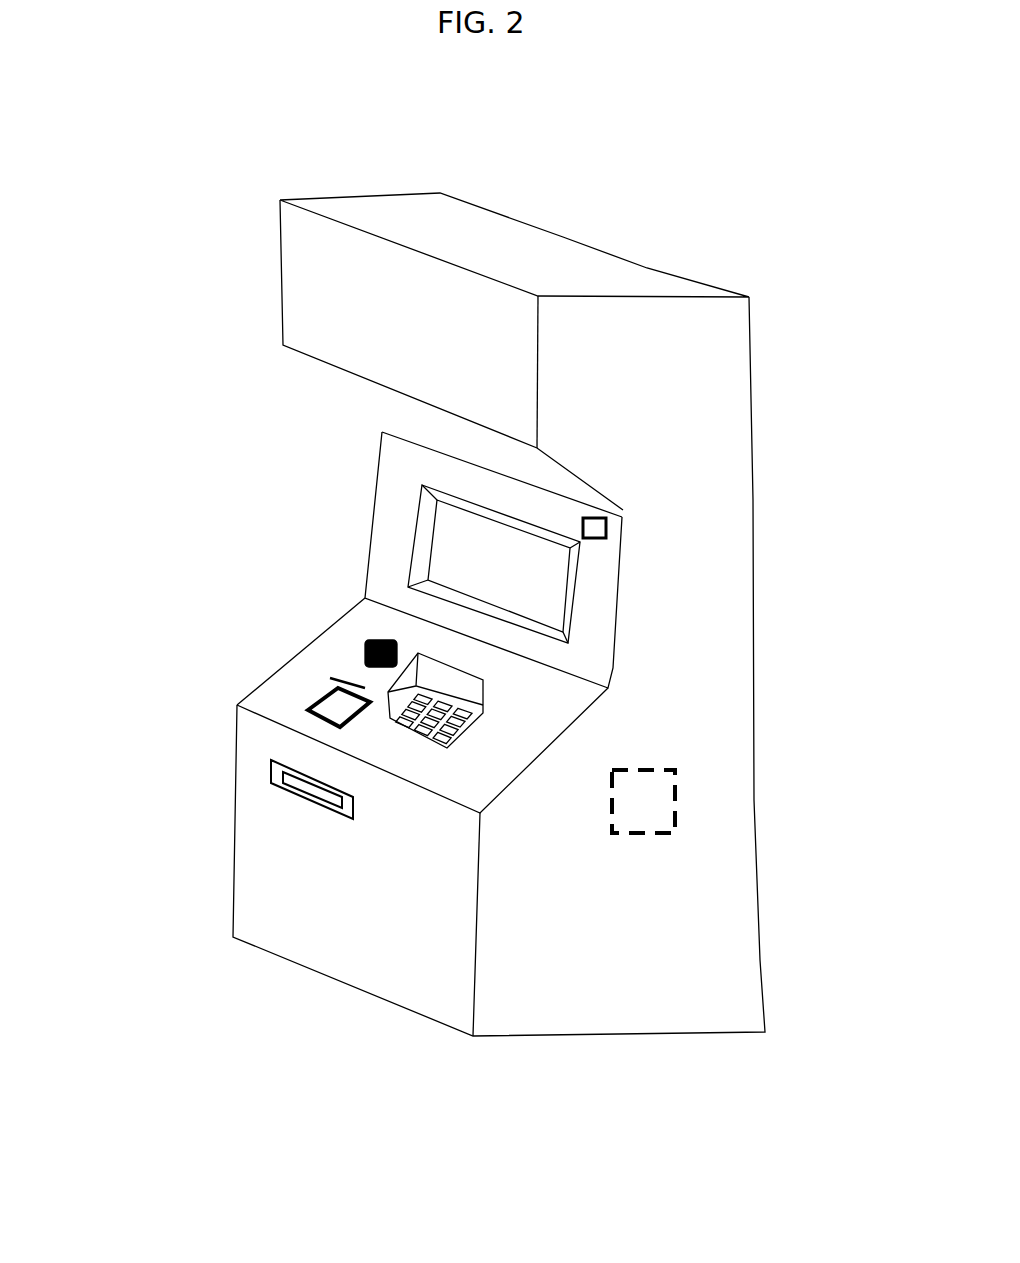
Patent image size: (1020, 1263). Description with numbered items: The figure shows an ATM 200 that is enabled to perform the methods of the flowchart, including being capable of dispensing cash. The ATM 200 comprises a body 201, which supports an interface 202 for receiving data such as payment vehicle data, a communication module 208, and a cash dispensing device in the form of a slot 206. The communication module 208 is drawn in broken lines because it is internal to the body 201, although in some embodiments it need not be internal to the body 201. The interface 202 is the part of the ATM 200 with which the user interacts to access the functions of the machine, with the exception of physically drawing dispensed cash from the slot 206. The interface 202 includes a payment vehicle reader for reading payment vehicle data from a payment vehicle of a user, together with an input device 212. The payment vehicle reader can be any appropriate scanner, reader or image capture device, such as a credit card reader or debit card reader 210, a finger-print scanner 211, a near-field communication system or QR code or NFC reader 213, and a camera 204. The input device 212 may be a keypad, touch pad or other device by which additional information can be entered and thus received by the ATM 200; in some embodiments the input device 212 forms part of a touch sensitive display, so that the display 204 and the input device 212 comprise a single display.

The ATM 200 is at (255, 174).
The body 201 is at (637, 393).
The interface 202 is at (260, 488).
The camera 204 is at (514, 576).
The slot 206 is at (283, 777).
The communication module 208 is at (650, 795).
The credit card reader 210 is at (342, 673).
The finger-print scanner 211 is at (383, 633).
The input device 212 is at (430, 748).
The near-field communication system 213 is at (317, 708).